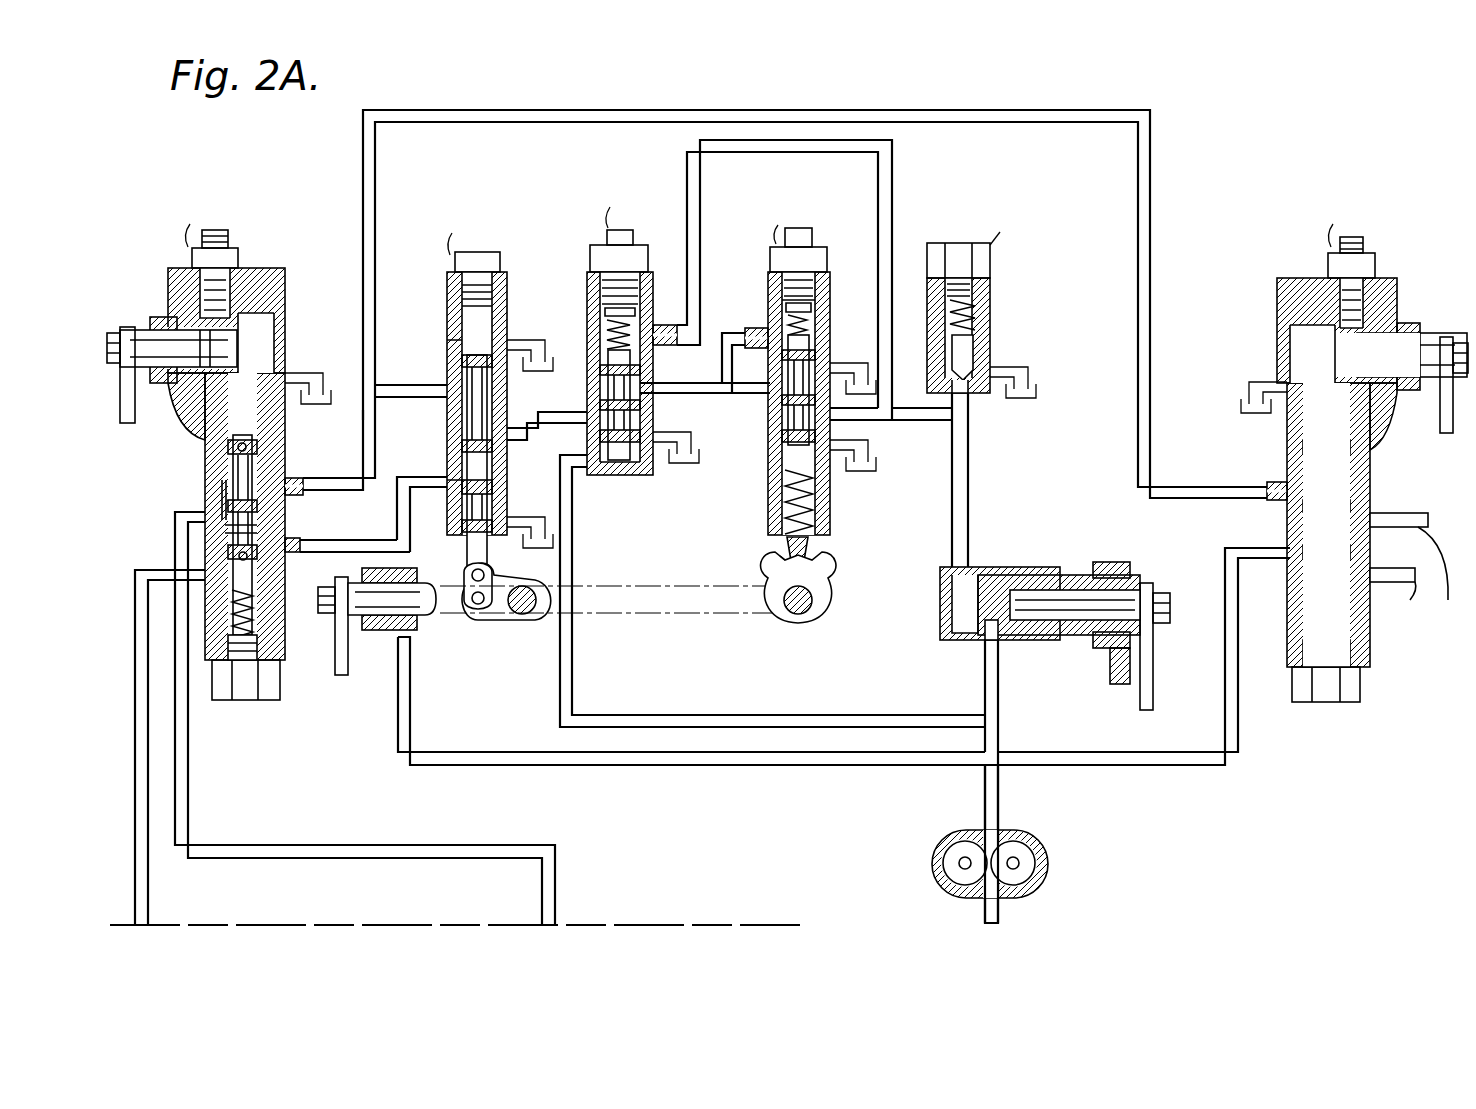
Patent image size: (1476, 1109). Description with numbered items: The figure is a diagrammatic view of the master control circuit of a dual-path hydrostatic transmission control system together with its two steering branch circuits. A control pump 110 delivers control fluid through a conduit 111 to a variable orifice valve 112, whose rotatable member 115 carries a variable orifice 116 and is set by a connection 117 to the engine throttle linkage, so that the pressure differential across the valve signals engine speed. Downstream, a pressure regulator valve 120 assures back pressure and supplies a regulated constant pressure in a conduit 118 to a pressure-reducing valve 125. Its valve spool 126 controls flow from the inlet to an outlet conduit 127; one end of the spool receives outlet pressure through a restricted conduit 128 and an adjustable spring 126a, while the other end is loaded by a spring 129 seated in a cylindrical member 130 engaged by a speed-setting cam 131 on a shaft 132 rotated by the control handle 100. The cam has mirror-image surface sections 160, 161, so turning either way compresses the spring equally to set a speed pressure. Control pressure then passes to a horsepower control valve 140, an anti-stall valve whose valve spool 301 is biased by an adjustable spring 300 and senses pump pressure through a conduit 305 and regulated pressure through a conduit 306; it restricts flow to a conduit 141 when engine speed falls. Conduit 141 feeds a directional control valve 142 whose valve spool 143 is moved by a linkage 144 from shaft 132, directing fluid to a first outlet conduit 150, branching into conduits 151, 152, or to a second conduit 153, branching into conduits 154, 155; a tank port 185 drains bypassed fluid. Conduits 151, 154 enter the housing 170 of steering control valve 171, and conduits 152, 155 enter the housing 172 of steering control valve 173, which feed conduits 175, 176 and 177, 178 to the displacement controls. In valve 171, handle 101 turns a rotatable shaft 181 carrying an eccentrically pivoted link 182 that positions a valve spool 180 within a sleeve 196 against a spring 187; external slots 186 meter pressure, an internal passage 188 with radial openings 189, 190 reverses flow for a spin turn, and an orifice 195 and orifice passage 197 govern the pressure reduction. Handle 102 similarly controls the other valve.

The control handle 100 is at (345, 676).
The control handle 101 is at (127, 423).
The control handle 102 is at (1440, 420).
The control pump 110 is at (932, 866).
The conduit 111 is at (998, 742).
The variable orifice valve 112 is at (1041, 602).
The rotatable member 115 is at (1048, 610).
The variable orifice 116 is at (988, 640).
The connection / conduit 117 is at (968, 497).
The conduit 118 is at (872, 462).
The pressure regulator valve 120 is at (990, 320).
The pressure-reducing valve 125 is at (811, 390).
The valve spool 126 is at (782, 425).
The adjustable spring 126a is at (815, 340).
The outlet conduit 127 is at (665, 394).
The conduit 128 is at (726, 328).
The spring 129 is at (815, 520).
The cylindrical member 130 is at (815, 550).
The speed-setting cam 131 is at (812, 590).
The shaft 132 is at (405, 607).
The horsepower control valve 140 is at (643, 306).
The conduit 141 is at (560, 423).
The directional control valve 142 is at (469, 379).
The valve spool 143 is at (472, 530).
The linkage 144 is at (525, 622).
The first outlet conduit 150 is at (405, 385).
The branch conduit 151 is at (363, 418).
The branch conduit 152 is at (880, 110).
The second conduit 153 is at (405, 477).
The branch conduit 154 is at (358, 540).
The branch conduit 155 is at (742, 765).
The cam surface section 160 is at (770, 553).
The cam surface section 161 is at (838, 562).
The housing 170 is at (290, 347).
The steering control valve 171 is at (787, 439).
The housing 172 is at (1277, 340).
The steering control valve 173 is at (1328, 438).
The conduit 175 is at (148, 892).
The conduit 176 is at (188, 797).
The conduit 177 is at (1390, 520).
The conduit 178 is at (1390, 568).
The valve spool 180 is at (236, 455).
The rotatable shaft 181 is at (175, 352).
The eccentrically pivoted link 182 is at (240, 355).
The tank port 185 is at (535, 530).
The external slots 186 is at (225, 535).
The spring 187 is at (268, 647).
The internal passage 188 is at (222, 500).
The radial opening 189 is at (230, 432).
The radial opening 190 is at (262, 560).
The orifice 195 is at (296, 478).
The sleeve 196 is at (270, 607).
The orifice passage 197 is at (290, 538).
The adjustable spring 300 is at (605, 335).
The valve spool 301 is at (628, 378).
The conduit 305 is at (658, 715).
The conduit 306 is at (892, 165).